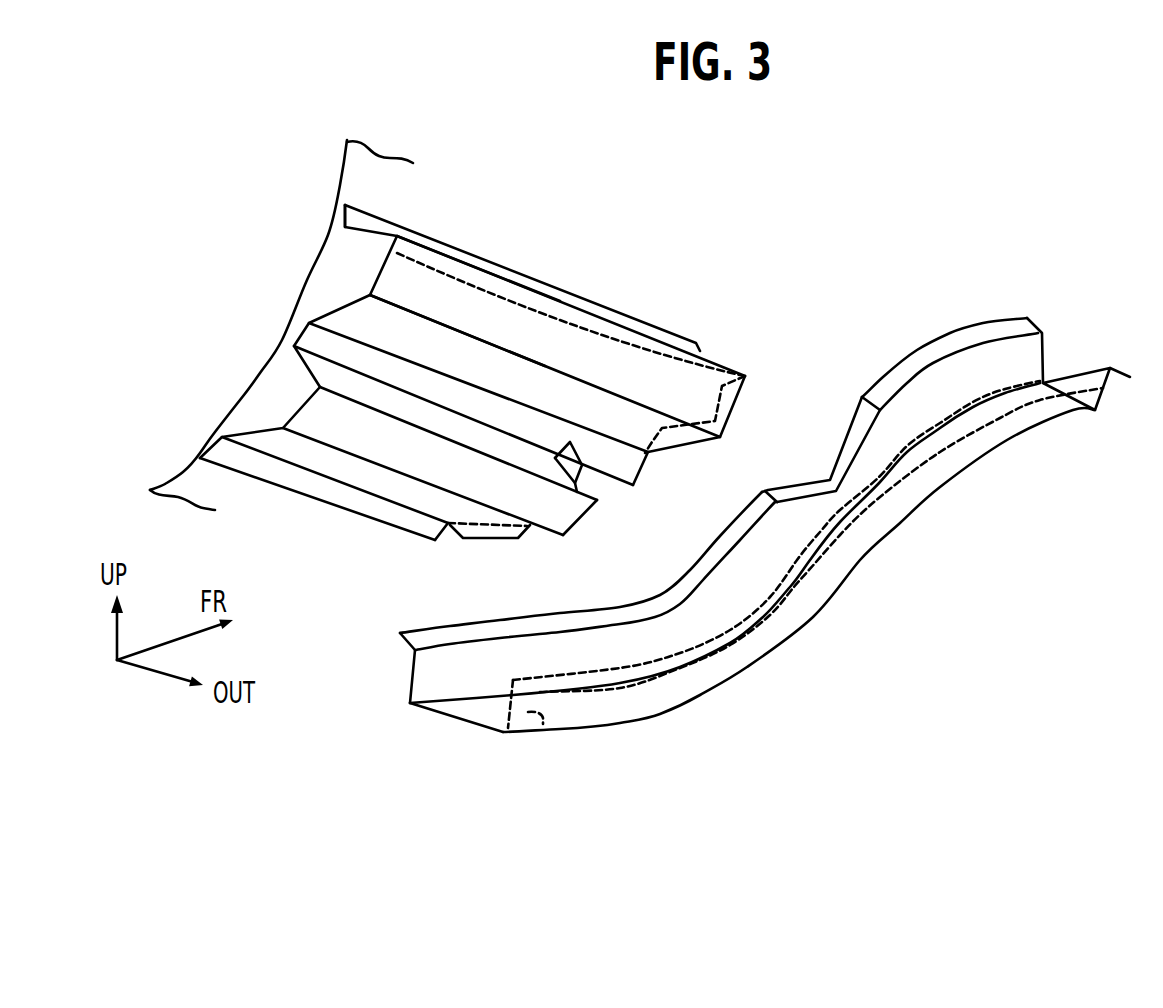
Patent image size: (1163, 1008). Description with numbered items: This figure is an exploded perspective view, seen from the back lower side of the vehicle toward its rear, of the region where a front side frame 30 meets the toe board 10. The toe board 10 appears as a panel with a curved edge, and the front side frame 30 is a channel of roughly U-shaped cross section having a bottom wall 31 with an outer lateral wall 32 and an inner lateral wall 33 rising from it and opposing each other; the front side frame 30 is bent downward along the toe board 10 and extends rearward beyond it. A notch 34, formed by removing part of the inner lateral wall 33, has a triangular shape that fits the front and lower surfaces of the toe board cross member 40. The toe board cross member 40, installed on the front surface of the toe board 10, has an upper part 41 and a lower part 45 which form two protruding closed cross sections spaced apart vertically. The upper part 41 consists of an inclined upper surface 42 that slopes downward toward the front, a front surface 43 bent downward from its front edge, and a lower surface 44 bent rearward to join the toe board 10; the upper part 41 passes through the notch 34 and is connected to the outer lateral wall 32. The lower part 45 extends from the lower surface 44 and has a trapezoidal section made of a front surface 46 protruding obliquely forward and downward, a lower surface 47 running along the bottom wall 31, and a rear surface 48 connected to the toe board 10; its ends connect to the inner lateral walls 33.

The toe board 10 is at (362, 188).
The front side frame 30 is at (598, 728).
The bottom wall 31 is at (465, 713).
The outer lateral wall 32 is at (535, 717).
The inner lateral wall 33 is at (437, 672).
The notch 34 is at (802, 476).
The toe board cross member 40 is at (544, 290).
The upper part 41 is at (528, 174).
The upper surface 42 is at (417, 250).
The front surface 43 is at (424, 283).
The lower surface 44 is at (413, 338).
The lower part 45 is at (358, 553).
The front surface 46 is at (370, 393).
The lower surface 47 is at (347, 430).
The rear surface 48 is at (303, 455).